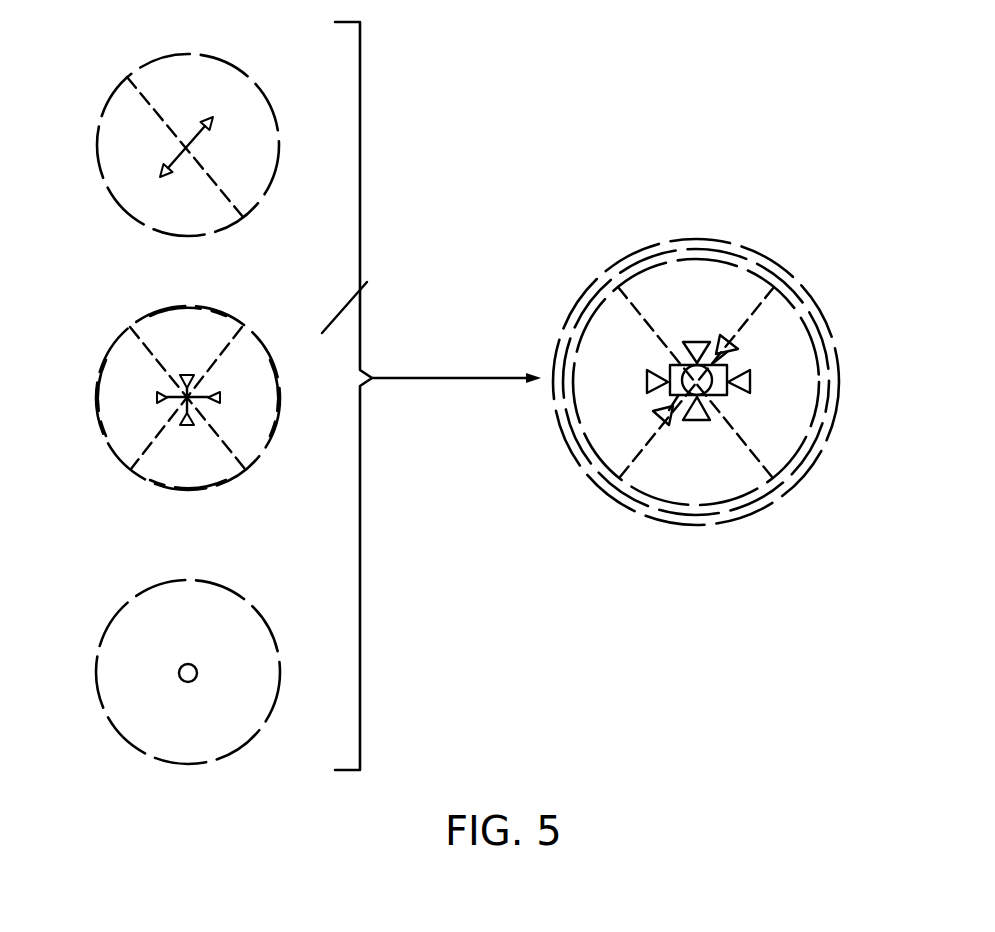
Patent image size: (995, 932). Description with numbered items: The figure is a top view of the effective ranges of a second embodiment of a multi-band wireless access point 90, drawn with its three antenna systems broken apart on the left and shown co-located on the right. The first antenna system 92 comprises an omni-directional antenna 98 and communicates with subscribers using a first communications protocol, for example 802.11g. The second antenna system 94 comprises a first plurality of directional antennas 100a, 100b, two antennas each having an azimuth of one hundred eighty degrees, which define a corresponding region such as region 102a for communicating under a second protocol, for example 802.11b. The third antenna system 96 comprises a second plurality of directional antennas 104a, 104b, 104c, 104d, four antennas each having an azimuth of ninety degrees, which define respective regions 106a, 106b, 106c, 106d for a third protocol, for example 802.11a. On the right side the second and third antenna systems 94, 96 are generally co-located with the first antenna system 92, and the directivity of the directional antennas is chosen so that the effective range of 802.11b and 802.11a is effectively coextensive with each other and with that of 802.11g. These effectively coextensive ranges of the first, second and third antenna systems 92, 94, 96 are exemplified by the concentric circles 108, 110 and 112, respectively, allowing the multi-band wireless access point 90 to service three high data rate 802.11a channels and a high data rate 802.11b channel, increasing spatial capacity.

The multi-band wireless access point 90 is at (855, 205).
The first antenna system 92 is at (115, 594).
The second antenna system 94 is at (138, 46).
The third antenna system 96 is at (95, 327).
The omni-directional antenna 98 is at (199, 678).
The directional antenna 100a is at (212, 121).
The directional antenna 100b is at (166, 176).
The region 102a is at (206, 101).
The directional antenna 104a is at (221, 394).
The directional antenna 104b is at (194, 378).
The directional antenna 104c is at (159, 400).
The directional antenna 104d is at (186, 427).
The region 106a is at (268, 426).
The region 106b is at (182, 314).
The region 106c is at (118, 366).
The region 106d is at (232, 478).
The circle 108 is at (776, 259).
The circle 110 is at (727, 253).
The circle 112 is at (816, 300).